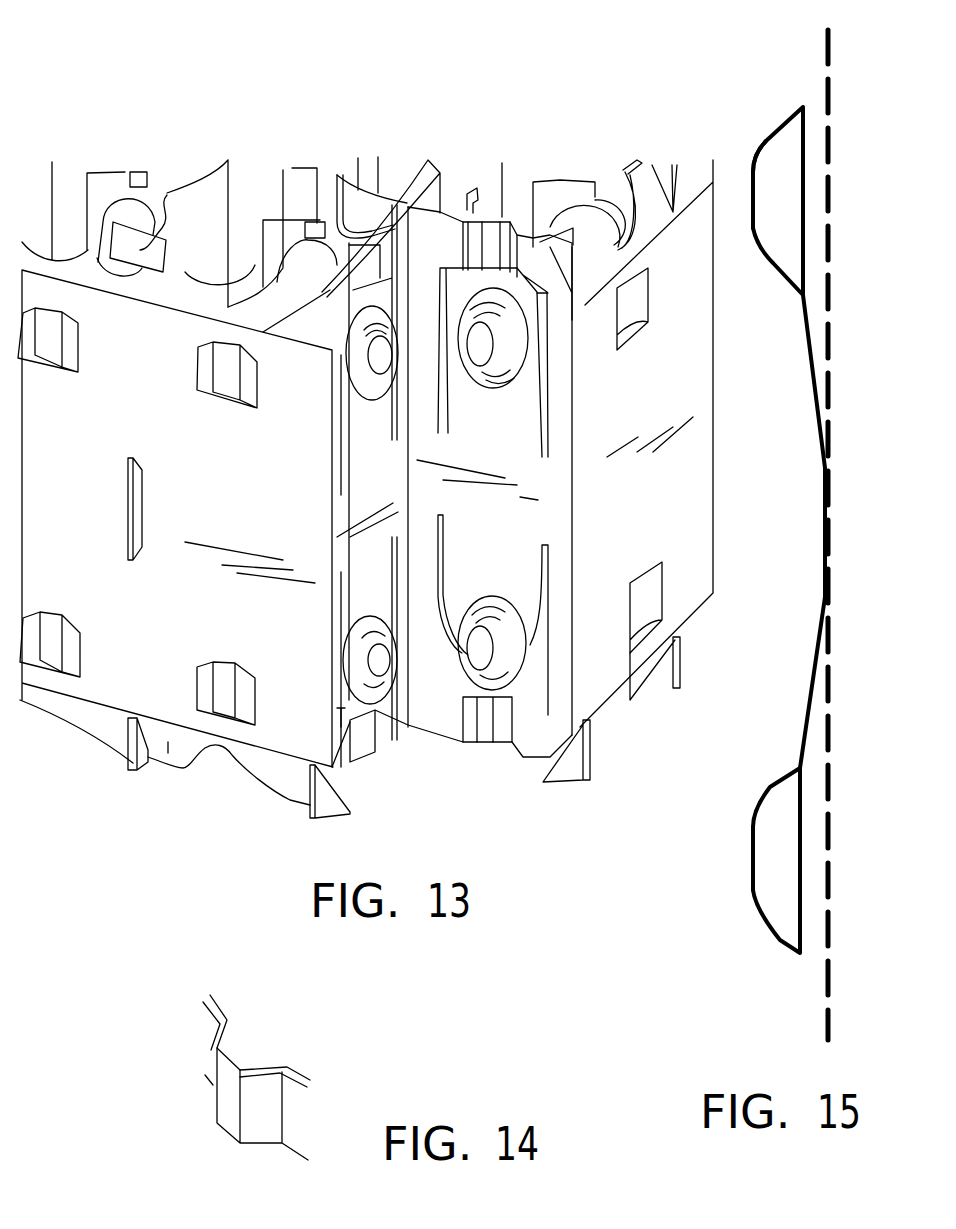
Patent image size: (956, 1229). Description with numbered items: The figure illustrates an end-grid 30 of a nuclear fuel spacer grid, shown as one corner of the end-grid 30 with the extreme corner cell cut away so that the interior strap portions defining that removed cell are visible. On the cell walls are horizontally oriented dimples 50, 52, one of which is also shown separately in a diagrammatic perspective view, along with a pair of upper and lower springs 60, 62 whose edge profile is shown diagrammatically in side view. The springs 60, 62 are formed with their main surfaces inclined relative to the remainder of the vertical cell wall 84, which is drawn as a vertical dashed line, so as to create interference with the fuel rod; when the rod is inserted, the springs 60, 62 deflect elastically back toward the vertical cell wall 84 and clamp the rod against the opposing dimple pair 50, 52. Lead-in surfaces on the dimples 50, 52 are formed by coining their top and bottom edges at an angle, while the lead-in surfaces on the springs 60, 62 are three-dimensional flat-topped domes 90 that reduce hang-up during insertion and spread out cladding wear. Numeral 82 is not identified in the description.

In FIG. 13, the end-grid 30 is at (197, 850).
In FIG. 13, the dimple 50 is at (228, 373).
In FIG. 14, the dimple 50 is at (211, 1093).
In FIG. 13, the dimple 52 is at (232, 690).
In FIG. 14, the dimple 52 is at (191, 1077).
In FIG. 13, the spring 60 is at (457, 359).
In FIG. 15, the spring 60 is at (789, 102).
In FIG. 13, the spring 62 is at (458, 653).
In FIG. 15, the spring 62 is at (777, 938).
In FIG. 13, the retention clip 82 is at (168, 257).
In FIG. 15, the vertical cell wall 84 is at (838, 146).
In FIG. 13, the flat-topped dome 90 is at (460, 300).
In FIG. 15, the flat-topped dome 90 is at (769, 140).